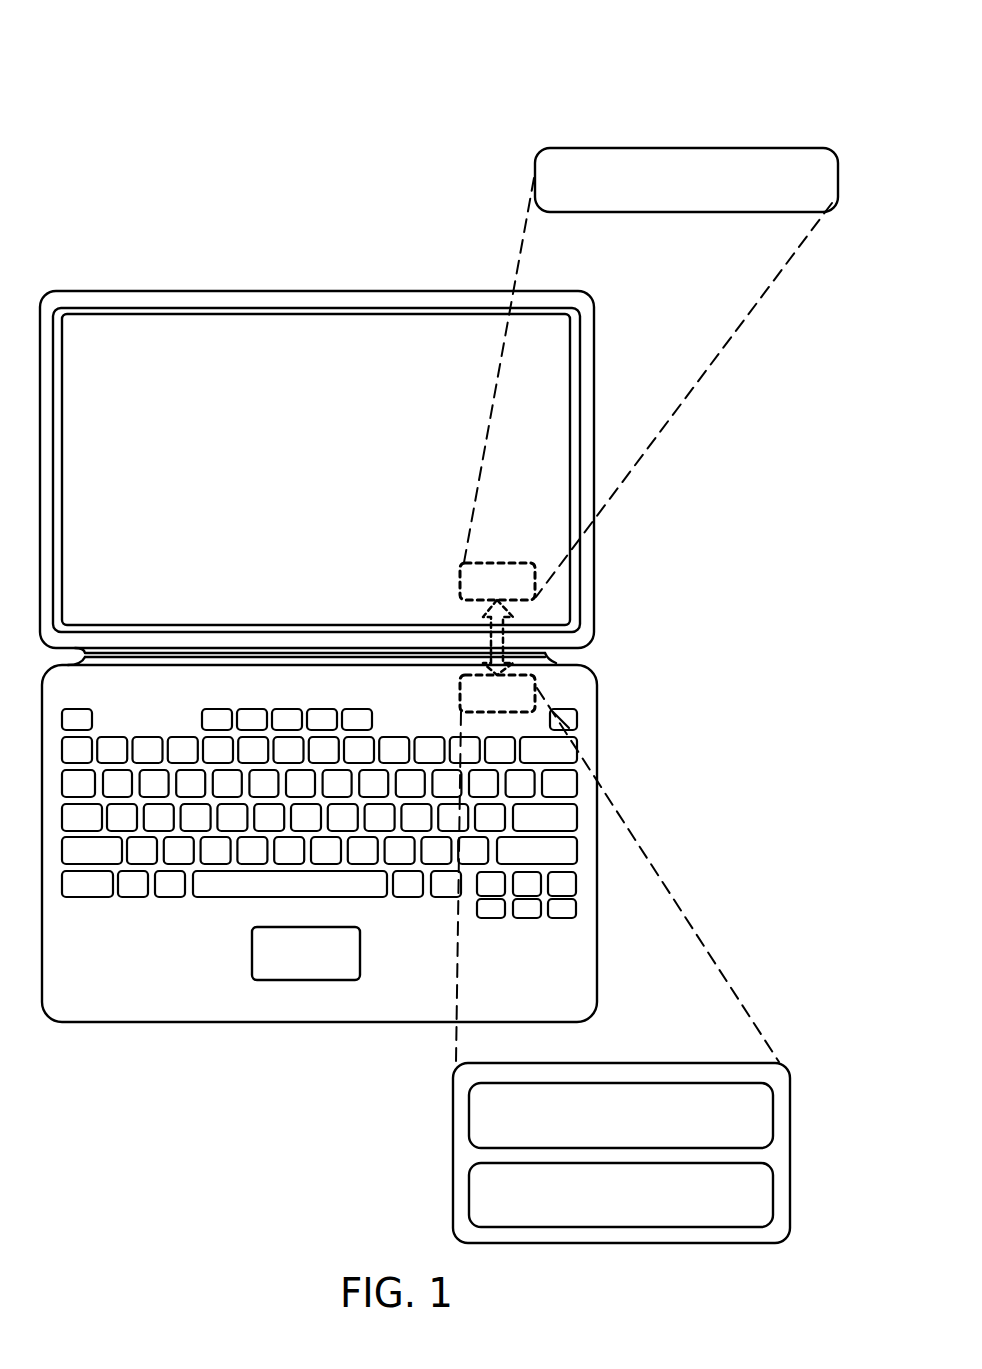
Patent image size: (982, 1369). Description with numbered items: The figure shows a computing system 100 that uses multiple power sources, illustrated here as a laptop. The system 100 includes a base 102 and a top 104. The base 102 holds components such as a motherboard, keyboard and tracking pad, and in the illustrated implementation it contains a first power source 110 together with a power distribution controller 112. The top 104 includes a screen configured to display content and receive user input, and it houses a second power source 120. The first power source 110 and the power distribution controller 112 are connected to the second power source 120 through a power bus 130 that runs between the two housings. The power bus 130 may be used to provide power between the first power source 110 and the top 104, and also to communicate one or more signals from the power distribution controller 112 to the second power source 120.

The system 100 is at (318, 559).
The base 102 is at (160, 1022).
The top 104 is at (217, 291).
The first power source 110 is at (604, 1218).
The power distribution controller 112 is at (604, 1138).
The second power source 120 is at (670, 201).
The power bus 130 is at (505, 638).